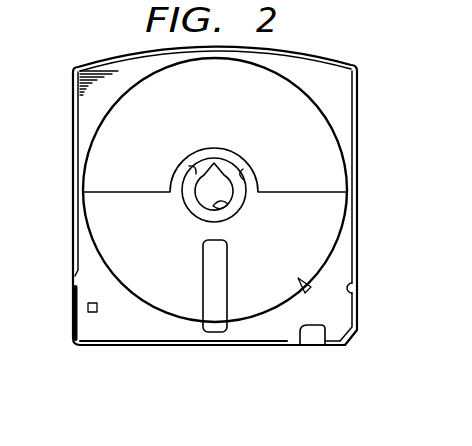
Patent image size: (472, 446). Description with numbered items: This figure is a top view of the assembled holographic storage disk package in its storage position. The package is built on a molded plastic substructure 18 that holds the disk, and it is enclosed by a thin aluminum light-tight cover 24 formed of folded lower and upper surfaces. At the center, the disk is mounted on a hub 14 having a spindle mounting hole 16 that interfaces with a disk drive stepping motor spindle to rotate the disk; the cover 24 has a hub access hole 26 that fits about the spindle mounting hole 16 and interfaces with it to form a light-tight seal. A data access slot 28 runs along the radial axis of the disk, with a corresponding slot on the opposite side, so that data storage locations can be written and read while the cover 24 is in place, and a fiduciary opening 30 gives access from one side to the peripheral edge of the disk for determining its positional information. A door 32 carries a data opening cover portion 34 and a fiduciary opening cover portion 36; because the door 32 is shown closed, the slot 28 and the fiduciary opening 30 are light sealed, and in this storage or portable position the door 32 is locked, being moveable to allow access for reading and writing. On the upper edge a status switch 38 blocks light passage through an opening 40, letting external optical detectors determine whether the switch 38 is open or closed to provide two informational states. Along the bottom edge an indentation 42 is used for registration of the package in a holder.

The substructure 18 is at (358, 92).
The cover 24 is at (120, 73).
The fiduciary opening 30 is at (299, 277).
The fiduciary opening cover portion 36 is at (309, 292).
The hub 14 is at (193, 170).
The hub access hole 26 is at (238, 174).
The spindle mounting hole 16 is at (223, 204).
The data opening cover portion 34 is at (203, 273).
The data access slot 28 is at (227, 262).
The door 32 is at (313, 346).
The indentation 42 is at (358, 288).
The status switch 38 is at (73, 308).
The opening 40 is at (97, 308).